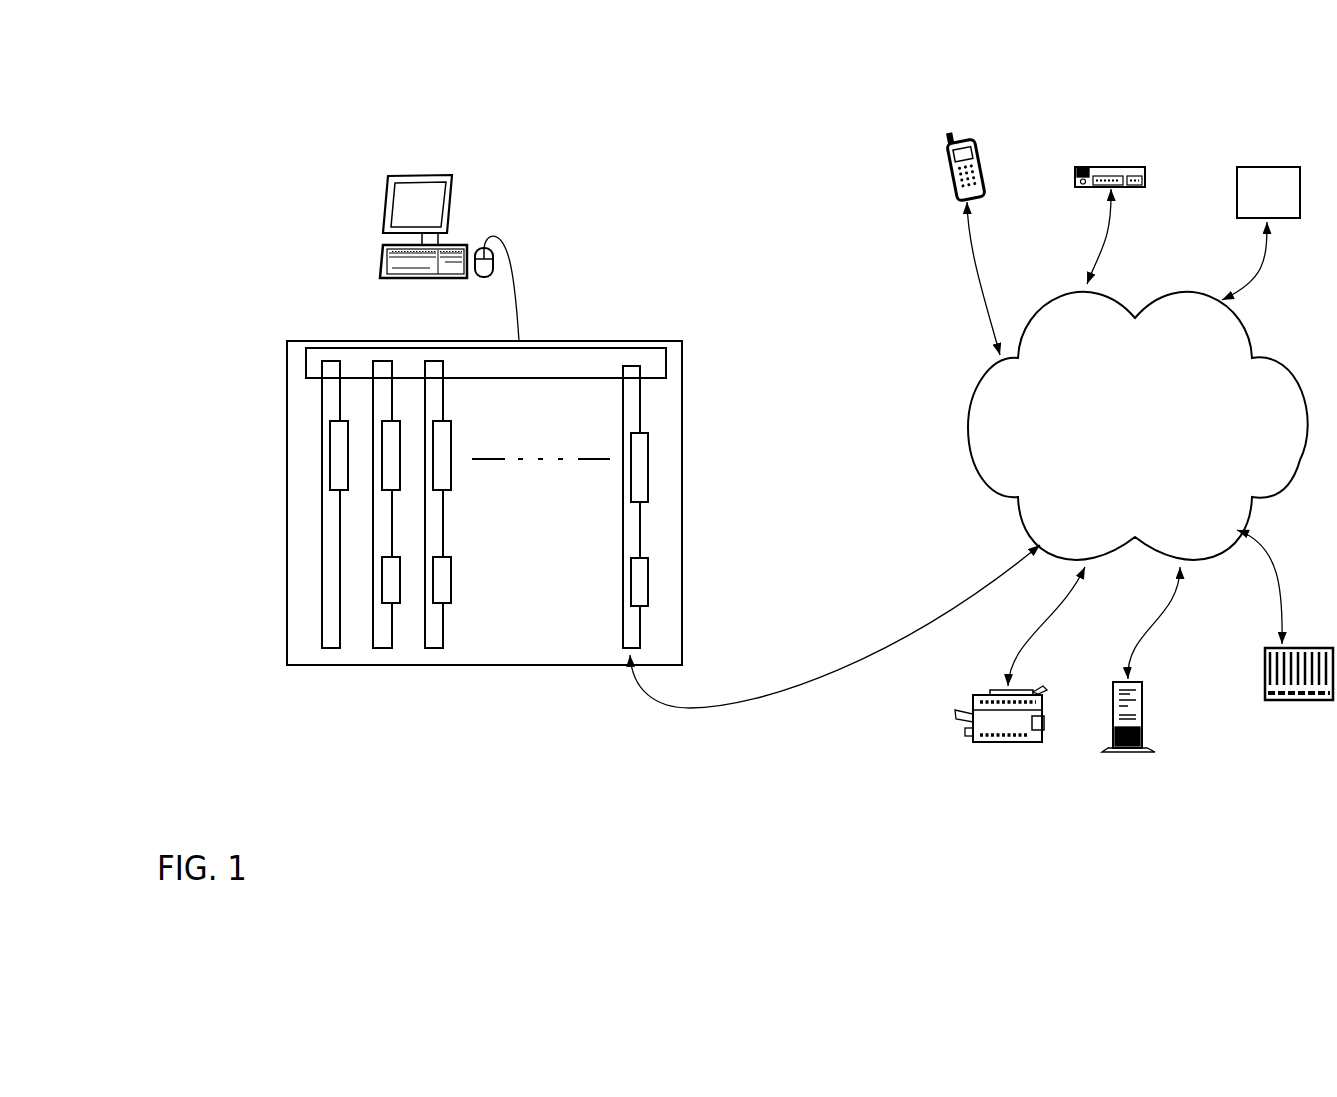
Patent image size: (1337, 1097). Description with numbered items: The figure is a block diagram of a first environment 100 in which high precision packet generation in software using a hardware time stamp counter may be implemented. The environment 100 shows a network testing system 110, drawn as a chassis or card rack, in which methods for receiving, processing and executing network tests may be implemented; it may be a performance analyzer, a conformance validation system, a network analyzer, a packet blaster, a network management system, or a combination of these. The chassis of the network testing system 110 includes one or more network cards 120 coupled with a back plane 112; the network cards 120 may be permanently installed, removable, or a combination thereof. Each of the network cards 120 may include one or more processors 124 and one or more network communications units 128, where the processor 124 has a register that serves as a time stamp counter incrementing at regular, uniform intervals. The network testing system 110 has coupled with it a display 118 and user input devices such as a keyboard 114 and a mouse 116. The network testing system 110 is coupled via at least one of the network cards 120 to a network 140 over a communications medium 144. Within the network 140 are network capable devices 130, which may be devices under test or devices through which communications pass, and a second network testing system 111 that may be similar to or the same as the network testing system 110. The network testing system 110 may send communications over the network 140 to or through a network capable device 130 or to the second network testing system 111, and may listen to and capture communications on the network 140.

The environment 100 is at (268, 58).
The network testing system 110 is at (547, 341).
The second network testing system 111 is at (1261, 233).
The back plane 112 is at (665, 362).
The keyboard 114 is at (373, 263).
The mouse 116 is at (486, 278).
The display 118 is at (381, 213).
The network cards 120 is at (306, 647).
The processor 124 is at (648, 467).
The network communications unit 128 is at (648, 582).
The network capable device 130 is at (1130, 440).
The network 140 is at (1138, 426).
The communications medium 144 is at (695, 708).